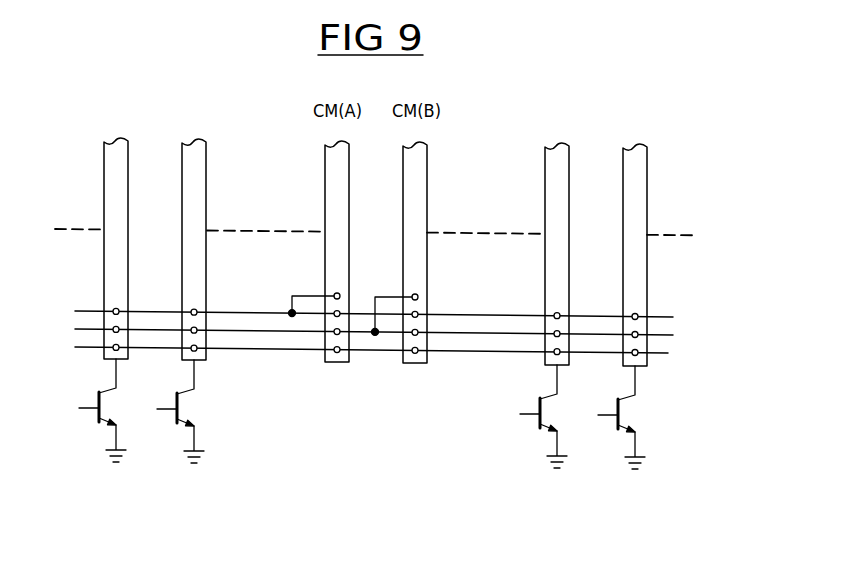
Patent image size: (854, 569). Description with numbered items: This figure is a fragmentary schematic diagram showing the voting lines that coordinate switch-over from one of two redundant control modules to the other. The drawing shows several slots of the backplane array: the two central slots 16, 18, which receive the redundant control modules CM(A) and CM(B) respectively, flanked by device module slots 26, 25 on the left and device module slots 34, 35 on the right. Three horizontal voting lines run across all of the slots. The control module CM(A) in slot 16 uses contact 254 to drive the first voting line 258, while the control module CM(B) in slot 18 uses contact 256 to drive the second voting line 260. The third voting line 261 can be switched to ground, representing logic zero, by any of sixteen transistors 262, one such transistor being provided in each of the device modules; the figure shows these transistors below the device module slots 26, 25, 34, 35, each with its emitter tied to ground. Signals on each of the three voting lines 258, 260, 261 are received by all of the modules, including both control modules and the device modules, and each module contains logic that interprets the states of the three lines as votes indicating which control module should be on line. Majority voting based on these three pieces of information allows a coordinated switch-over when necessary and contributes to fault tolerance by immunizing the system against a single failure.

The device module slot 26 is at (113, 144).
The device module slot 25 is at (191, 145).
The central slot 16 is at (325, 185).
The central slot 18 is at (427, 186).
The device module slot 34 is at (555, 149).
The device module slot 35 is at (633, 150).
The contact 254 is at (308, 295).
The contact 256 is at (390, 290).
The voting line 258 is at (673, 317).
The voting line 260 is at (673, 335).
The third voting line 261 is at (668, 353).
The transistor 262 is at (651, 414).